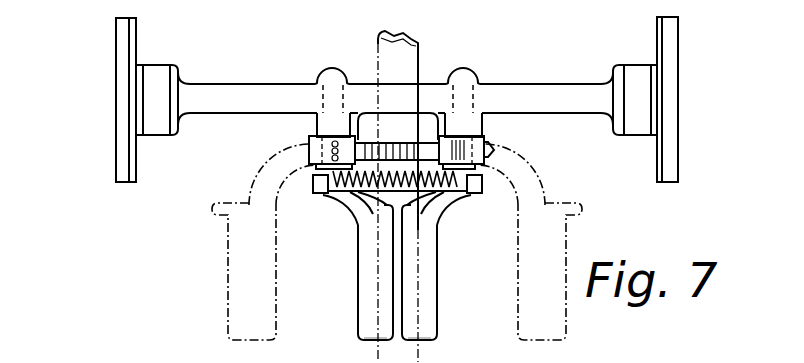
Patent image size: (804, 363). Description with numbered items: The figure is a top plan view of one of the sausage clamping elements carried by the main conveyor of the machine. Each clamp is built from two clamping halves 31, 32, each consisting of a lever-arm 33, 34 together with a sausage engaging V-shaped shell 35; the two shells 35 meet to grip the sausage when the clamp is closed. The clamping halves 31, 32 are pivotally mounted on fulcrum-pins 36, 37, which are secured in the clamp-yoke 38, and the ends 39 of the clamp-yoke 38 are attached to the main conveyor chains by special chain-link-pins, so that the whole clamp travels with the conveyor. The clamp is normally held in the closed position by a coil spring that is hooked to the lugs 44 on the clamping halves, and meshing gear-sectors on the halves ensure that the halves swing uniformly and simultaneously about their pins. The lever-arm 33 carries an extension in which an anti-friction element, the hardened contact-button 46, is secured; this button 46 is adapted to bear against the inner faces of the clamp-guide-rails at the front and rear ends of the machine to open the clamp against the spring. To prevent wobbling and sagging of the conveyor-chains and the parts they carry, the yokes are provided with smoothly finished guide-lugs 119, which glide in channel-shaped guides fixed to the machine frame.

The guide-lugs 119 is at (120, 130).
The ends of the clamp-yoke 39 is at (160, 135).
The clamp-yoke 38 is at (530, 83).
The fulcrum-pin 37 is at (333, 71).
The fulcrum-pin 36 is at (463, 71).
The contact-button 46 is at (497, 148).
The lugs 44 is at (320, 197).
The lever-arm 34 is at (346, 206).
The lever-arm 33 is at (457, 206).
The clamping half 32 is at (357, 258).
The clamping half 31 is at (442, 250).
The sausage engaging V-shaped shells 35 is at (368, 323).